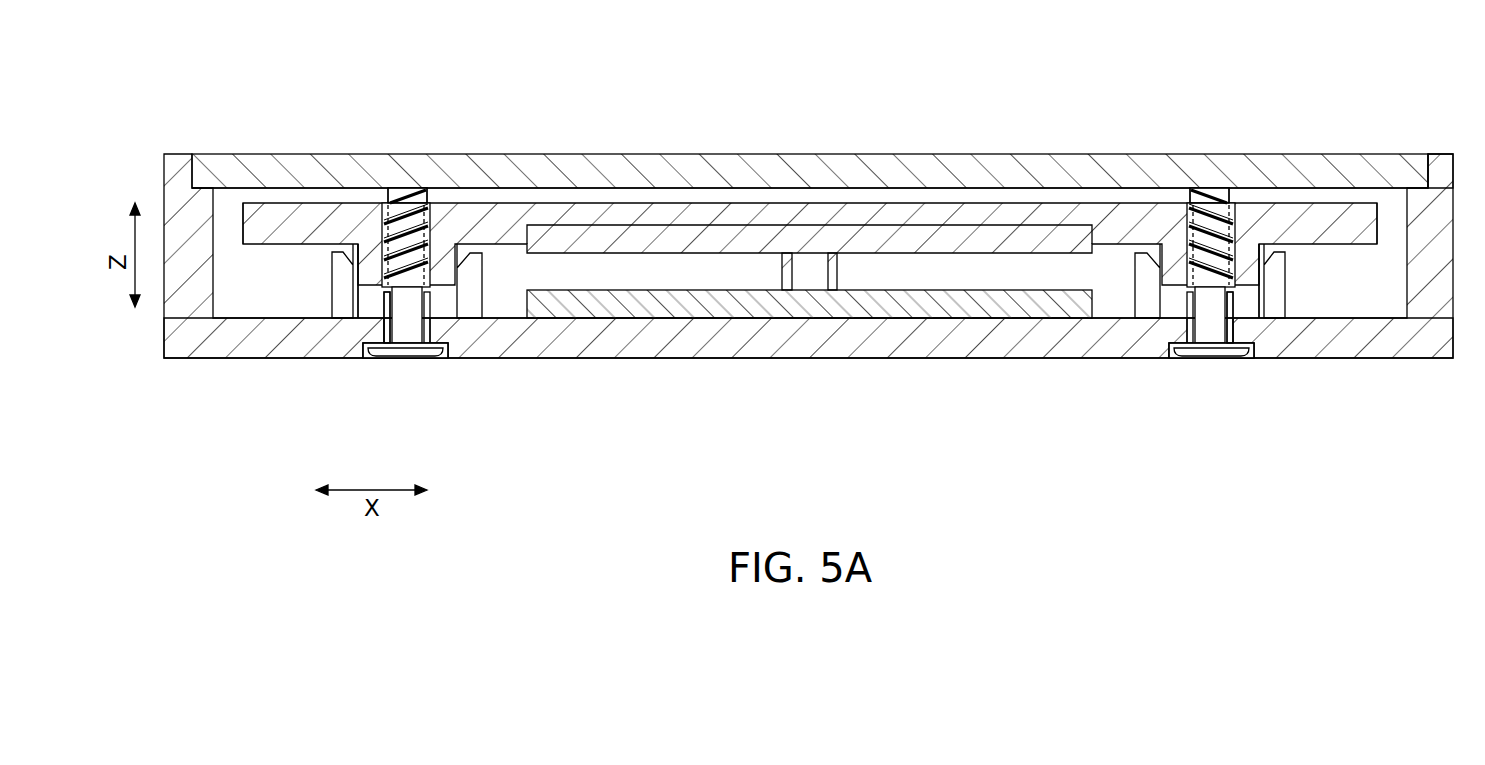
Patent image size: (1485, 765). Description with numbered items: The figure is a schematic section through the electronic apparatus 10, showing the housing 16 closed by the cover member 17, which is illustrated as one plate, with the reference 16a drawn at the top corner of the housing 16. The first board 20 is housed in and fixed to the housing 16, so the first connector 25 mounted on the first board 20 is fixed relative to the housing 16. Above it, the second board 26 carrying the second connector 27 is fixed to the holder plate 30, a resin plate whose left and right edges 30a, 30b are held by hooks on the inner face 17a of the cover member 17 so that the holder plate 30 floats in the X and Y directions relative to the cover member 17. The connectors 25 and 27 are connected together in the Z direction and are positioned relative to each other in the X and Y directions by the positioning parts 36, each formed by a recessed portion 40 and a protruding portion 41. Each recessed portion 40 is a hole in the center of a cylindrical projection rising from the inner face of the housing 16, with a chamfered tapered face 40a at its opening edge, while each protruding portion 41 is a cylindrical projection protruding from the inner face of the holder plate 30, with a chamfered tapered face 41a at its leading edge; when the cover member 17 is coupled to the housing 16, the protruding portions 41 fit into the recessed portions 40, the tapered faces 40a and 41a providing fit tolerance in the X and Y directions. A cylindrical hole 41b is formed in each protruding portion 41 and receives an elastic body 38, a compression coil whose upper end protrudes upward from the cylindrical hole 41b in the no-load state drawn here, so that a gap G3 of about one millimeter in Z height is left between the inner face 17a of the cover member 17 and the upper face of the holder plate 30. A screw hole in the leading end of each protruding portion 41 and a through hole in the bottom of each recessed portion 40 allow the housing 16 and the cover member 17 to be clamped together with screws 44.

The electronic apparatus 10 is at (177, 58).
The housing 16 is at (244, 360).
The housing top surface 16a is at (1423, 156).
The cover member 17 is at (500, 155).
The inner face of the cover member 17a is at (602, 186).
The first board 20 is at (668, 320).
The first connector 25 is at (830, 300).
The second board 26 is at (688, 232).
The second connector 27 is at (808, 268).
The holder plate 30 is at (928, 222).
The left edge of the holder plate 30a is at (245, 218).
The right edge of the holder plate 30b is at (1380, 218).
The positioning part 36 is at (418, 424).
The elastic body 38 is at (404, 196).
The recessed portion 40 is at (470, 312).
The tapered face of the recessed portion 40a is at (352, 248).
The protruding portion 41 is at (425, 346).
The tapered face of the protruding portion 41a is at (362, 320).
The cylindrical hole 41b is at (412, 200).
The screw 44 is at (405, 347).
The gap G3 is at (1021, 110).